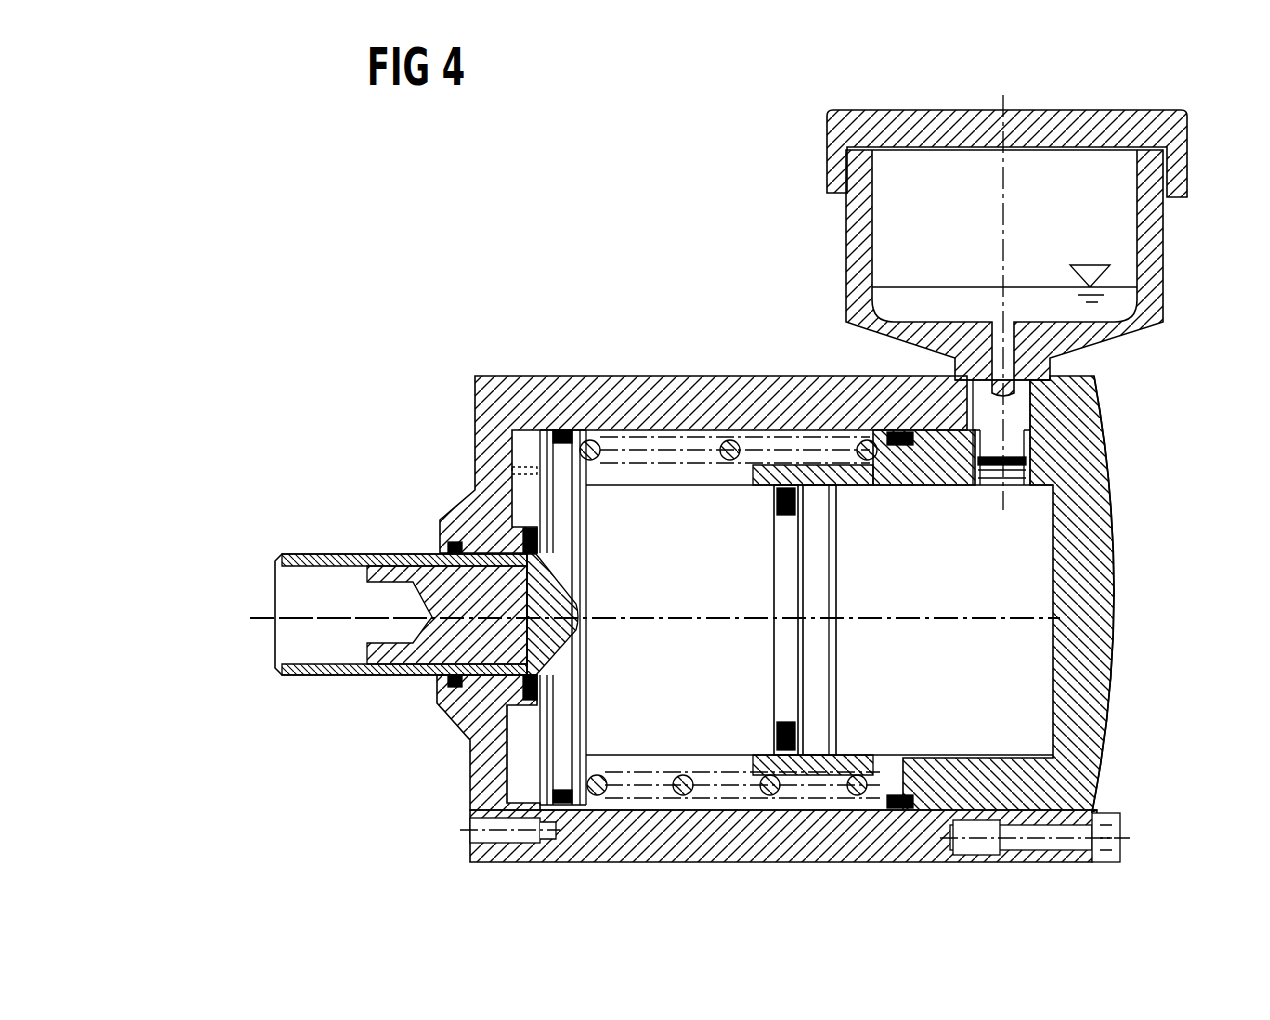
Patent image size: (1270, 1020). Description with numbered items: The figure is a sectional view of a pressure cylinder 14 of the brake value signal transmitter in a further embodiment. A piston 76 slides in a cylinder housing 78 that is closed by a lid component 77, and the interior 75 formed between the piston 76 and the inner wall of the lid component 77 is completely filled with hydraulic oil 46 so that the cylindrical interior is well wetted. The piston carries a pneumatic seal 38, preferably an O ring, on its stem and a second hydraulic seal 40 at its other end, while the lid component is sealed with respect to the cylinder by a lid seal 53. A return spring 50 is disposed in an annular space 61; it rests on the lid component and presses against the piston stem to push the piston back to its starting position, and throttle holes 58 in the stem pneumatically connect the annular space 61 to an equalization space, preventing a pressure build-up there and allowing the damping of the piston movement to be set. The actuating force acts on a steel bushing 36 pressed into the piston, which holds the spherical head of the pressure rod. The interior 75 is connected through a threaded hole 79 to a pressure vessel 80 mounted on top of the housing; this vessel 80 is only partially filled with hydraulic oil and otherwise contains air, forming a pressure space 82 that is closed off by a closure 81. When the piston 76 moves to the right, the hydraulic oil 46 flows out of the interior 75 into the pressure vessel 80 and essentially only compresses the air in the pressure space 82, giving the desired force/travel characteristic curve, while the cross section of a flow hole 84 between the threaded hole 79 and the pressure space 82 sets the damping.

The master cylinder assembly 14 is at (714, 218).
The steel bushing 36 is at (332, 553).
The pneumatic seal 38 is at (545, 797).
The second hydraulic seal 40 is at (780, 490).
The hydraulic oil 46 is at (1128, 335).
The return spring 50 is at (715, 445).
The lid seal 53 is at (900, 790).
The throttle holes 58 is at (540, 470).
The annular space 61 is at (715, 760).
The interior 75 is at (1030, 490).
The piston 76 is at (640, 505).
The lid component 77 is at (1090, 590).
The cylinder housing 78 is at (645, 805).
The hole 79 is at (1015, 440).
The pressure vessel 80 is at (1160, 278).
The closure 81 is at (1075, 122).
The pressure space 82 is at (1118, 230).
The flow hole 84 is at (1100, 373).